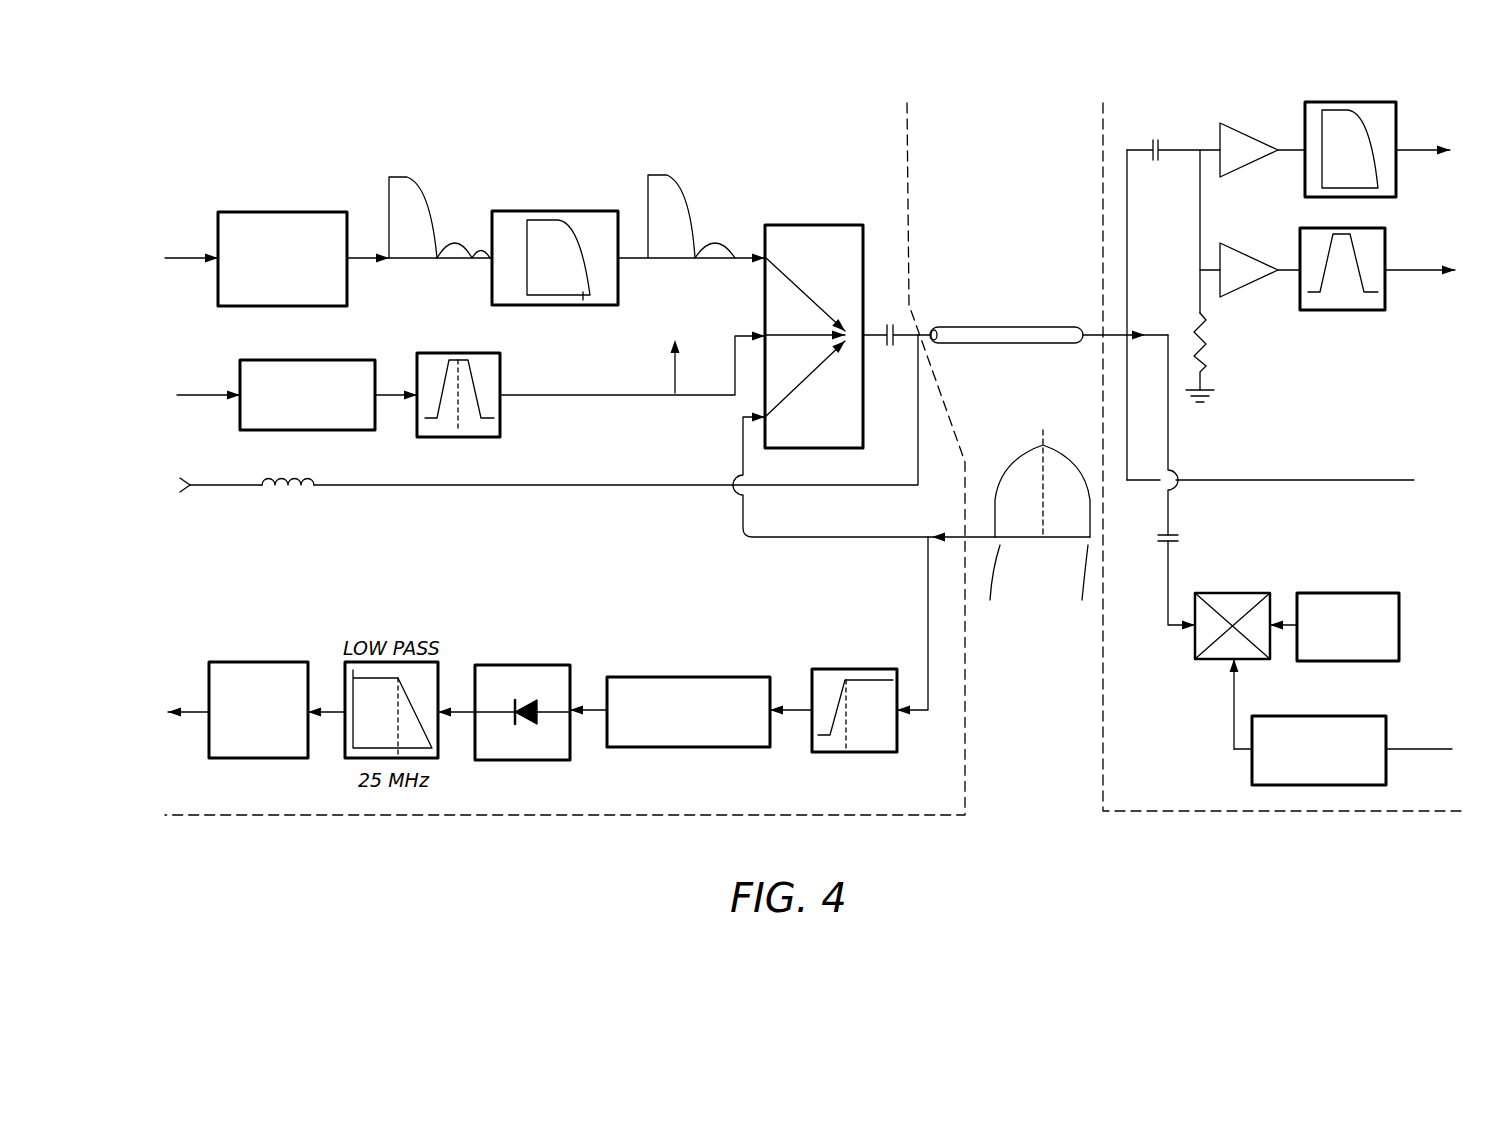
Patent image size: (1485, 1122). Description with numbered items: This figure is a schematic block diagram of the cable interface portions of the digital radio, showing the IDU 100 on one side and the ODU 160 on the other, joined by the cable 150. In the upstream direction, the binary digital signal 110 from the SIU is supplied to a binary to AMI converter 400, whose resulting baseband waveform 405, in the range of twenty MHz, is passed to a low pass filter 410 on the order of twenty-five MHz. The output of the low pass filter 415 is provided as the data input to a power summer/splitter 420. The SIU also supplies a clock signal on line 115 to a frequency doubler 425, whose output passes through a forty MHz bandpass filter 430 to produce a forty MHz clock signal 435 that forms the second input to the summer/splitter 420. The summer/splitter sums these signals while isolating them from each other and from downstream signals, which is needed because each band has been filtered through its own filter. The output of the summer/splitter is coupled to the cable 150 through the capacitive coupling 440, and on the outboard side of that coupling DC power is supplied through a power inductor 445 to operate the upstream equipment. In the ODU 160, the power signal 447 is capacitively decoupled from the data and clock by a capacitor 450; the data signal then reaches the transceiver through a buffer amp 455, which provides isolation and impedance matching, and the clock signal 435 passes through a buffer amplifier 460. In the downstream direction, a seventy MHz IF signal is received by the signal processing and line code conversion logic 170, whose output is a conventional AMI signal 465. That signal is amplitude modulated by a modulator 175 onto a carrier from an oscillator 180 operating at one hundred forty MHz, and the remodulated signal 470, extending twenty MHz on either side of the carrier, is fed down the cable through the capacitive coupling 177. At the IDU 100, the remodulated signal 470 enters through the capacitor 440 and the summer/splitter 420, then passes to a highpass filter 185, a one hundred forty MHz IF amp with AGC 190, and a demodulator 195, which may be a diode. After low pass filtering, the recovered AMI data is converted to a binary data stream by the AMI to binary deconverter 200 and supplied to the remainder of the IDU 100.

The IDU 100 is at (793, 815).
The ODU 160 is at (1188, 812).
The binary digital signal 110 is at (173, 262).
The line 115 is at (211, 395).
The binary to AMI converter 400 is at (283, 212).
The baseband waveform 405 is at (410, 262).
The low pass filter 410 is at (545, 305).
The output of the low pass filter 415 is at (676, 262).
The power summer/splitter 420 is at (820, 225).
The frequency doubler 425 is at (308, 360).
The bandpass filter 430 is at (500, 422).
The clock signal 435 is at (603, 393).
The capacitive coupling 440 is at (894, 345).
The power inductor 445 is at (298, 479).
The cable 150 is at (1003, 327).
The remodulated signal 470 is at (1035, 445).
The highpass filter 185 is at (850, 669).
The IF amp with AGC 190 is at (685, 677).
The demodulator 195 is at (520, 665).
The AMI to binary deconverter 200 is at (256, 662).
The capacitor 450 is at (1160, 162).
The buffer amp 455 is at (1248, 130).
The buffer amplifier 460 is at (1248, 256).
The power signal 447 is at (1258, 480).
The capacitive coupling 177 is at (1180, 540).
The modulator 175 is at (1212, 664).
The oscillator 180 is at (1348, 593).
The AMI signal 465 is at (1234, 725).
The signal processing and line code conversion logic 170 is at (1318, 716).